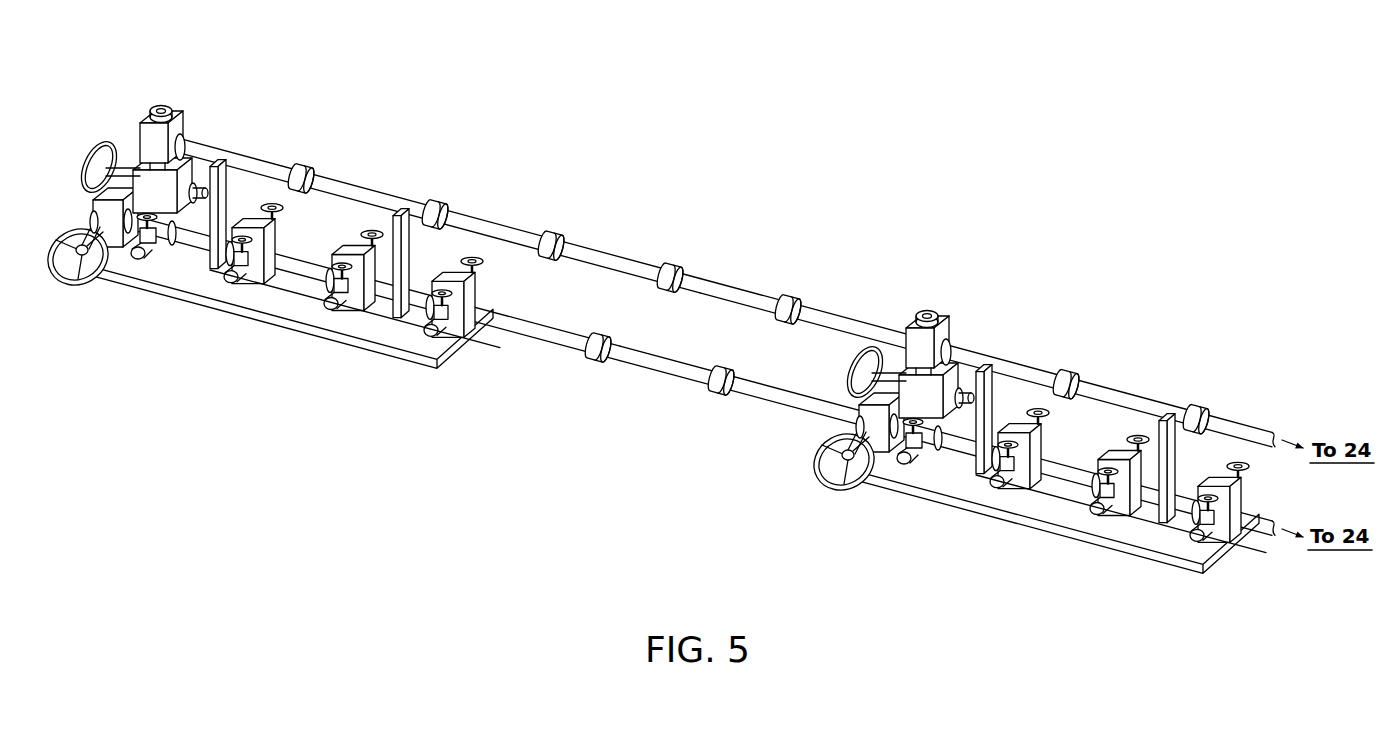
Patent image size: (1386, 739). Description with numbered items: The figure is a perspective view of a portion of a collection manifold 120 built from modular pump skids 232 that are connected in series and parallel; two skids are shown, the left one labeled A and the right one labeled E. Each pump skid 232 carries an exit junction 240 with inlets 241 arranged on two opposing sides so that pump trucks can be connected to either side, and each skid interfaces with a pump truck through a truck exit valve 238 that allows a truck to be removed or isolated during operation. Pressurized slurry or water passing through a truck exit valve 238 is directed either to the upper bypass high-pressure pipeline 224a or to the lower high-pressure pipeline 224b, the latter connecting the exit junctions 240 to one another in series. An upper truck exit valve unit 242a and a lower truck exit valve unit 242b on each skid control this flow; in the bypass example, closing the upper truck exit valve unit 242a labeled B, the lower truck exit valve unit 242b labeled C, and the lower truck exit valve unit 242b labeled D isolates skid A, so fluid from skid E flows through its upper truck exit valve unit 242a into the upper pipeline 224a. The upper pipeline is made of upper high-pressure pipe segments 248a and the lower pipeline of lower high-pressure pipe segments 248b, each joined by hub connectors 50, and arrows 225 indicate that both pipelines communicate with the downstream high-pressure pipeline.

The collection manifold 120 is at (723, 150).
The pump skid 232 is at (1058, 323).
The upper bypass high-pressure pipeline 224a is at (820, 312).
The lower high-pressure pipeline 224b is at (530, 338).
The upper high-pressure pipe segment 248a is at (543, 228).
The lower high-pressure pipe segment 248b is at (760, 402).
The arrows 225 is at (1287, 436).
The hub connector 50 is at (686, 266).
The inlet 241 is at (294, 222).
The truck exit valve 238 is at (300, 290).
The exit junction 240 is at (295, 298).
The upper truck exit valve unit 242a is at (950, 340).
The lower truck exit valve unit 242b is at (920, 455).
The pump skid A is at (357, 158).
The upper truck exit valve unit B is at (122, 134).
The lower truck exit valve unit C is at (119, 266).
The lower truck exit valve unit D is at (840, 394).
The pump skid E is at (1148, 347).